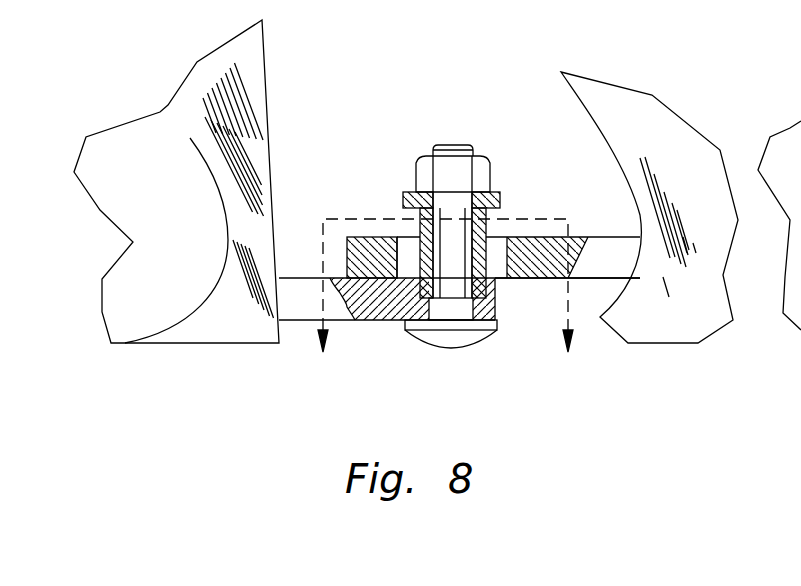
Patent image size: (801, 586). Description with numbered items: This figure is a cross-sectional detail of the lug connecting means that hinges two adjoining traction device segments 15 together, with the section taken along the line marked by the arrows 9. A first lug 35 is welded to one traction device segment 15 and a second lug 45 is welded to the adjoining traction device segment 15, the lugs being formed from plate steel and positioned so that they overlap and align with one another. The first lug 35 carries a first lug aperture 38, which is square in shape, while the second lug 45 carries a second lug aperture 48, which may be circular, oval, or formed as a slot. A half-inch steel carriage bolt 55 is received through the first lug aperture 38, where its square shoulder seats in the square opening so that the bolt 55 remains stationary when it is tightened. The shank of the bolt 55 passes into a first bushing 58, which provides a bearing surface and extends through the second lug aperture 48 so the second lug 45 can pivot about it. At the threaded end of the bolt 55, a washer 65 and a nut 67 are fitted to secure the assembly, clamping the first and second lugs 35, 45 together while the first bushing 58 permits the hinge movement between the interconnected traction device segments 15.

The traction device segment 15 is at (172, 385).
The section line 9- 9 is at (444, 305).
The first lug 35 is at (377, 322).
The first lug aperture 38 is at (388, 322).
The second lug 45 is at (355, 238).
The second lug aperture 48 is at (407, 247).
The bolt 55 is at (475, 340).
The first bushing 58 is at (483, 253).
The washer 65 is at (500, 201).
The nut 67 is at (425, 168).